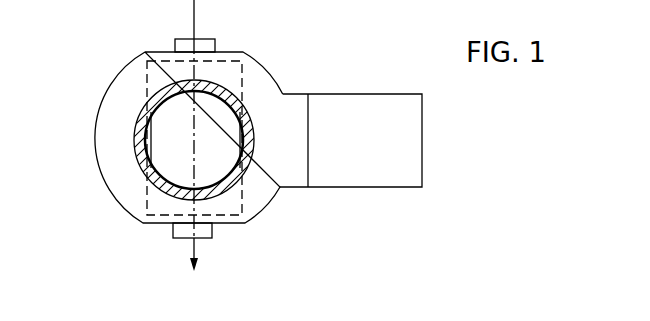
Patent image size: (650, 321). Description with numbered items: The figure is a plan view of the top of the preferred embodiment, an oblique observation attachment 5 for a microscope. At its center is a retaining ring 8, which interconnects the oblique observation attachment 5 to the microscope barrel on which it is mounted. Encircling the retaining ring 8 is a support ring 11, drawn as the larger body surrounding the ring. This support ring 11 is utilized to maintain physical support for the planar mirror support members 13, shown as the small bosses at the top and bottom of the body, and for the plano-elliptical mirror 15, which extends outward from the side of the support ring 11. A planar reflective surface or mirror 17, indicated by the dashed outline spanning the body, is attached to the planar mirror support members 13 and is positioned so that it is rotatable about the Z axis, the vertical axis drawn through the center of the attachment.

The oblique observation attachment 5 is at (350, 240).
The retaining ring 8 is at (138, 153).
The support ring 11 is at (267, 55).
The planar mirror support members 13 is at (212, 238).
The plano-elliptical mirror 15 is at (382, 100).
The planar reflective surface or mirror 17 is at (153, 80).